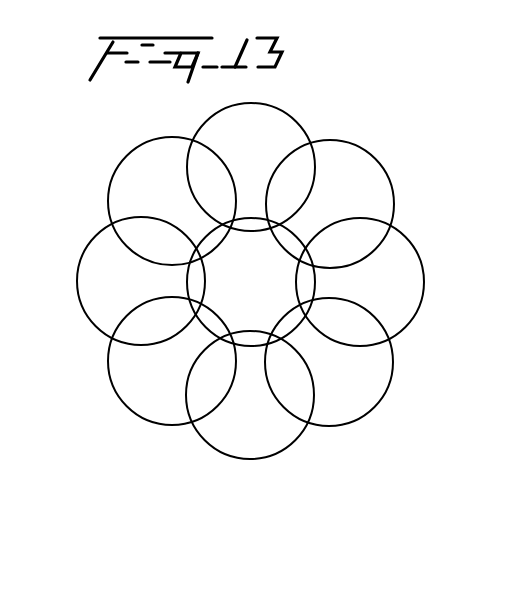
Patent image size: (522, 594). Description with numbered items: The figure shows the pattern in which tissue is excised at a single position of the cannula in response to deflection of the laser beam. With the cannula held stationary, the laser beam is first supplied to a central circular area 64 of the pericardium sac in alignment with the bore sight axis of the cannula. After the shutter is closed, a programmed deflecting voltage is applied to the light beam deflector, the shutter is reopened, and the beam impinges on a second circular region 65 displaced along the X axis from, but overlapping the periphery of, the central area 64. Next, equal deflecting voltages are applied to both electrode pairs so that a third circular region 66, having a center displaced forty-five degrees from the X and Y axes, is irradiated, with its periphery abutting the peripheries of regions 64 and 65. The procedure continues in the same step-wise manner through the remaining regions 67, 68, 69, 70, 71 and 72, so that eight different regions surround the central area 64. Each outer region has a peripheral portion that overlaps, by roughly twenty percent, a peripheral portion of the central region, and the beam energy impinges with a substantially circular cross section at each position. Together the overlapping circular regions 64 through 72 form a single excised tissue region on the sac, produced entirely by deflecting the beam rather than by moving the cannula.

The circular area 64 is at (248, 300).
The second circular region 65 is at (420, 278).
The third circular region 66 is at (382, 180).
The circular region 67 is at (293, 128).
The circular region 68 is at (127, 172).
The circular region 69 is at (102, 320).
The circular region 70 is at (147, 415).
The circular region 71 is at (273, 442).
The circular region 72 is at (377, 393).